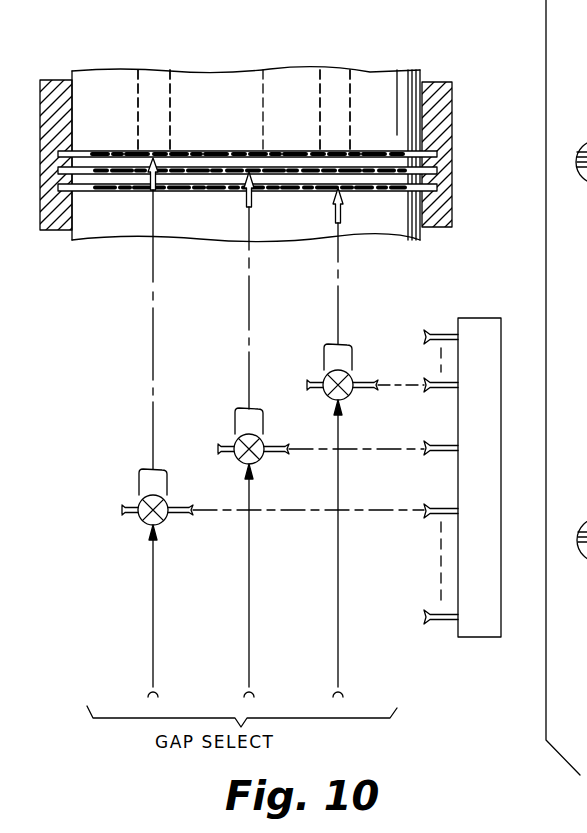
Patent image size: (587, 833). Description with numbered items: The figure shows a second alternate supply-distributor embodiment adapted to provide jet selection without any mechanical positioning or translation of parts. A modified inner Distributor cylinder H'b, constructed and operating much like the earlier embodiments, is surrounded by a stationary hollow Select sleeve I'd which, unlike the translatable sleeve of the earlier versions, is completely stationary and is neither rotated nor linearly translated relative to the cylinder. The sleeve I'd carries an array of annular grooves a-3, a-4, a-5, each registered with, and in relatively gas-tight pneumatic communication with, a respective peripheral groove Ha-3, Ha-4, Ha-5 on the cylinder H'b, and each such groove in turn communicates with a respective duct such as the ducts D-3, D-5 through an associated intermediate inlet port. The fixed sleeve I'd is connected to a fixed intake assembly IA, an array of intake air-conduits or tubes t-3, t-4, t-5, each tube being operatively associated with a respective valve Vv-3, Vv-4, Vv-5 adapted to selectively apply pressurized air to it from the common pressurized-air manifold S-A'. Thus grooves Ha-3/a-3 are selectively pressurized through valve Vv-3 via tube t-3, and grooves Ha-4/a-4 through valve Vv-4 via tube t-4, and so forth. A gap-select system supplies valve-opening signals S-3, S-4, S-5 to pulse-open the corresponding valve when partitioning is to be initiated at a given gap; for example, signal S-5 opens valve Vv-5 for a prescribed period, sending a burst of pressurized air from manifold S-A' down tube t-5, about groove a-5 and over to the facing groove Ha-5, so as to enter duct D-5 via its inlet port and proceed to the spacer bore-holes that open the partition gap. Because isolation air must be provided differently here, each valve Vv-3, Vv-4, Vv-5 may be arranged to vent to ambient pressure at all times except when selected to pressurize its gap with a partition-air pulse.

The inner Distributor cylinder H'b is at (246, 132).
The duct D-3 is at (152, 57).
The duct D-5 is at (328, 72).
The stationary hollow Select sleeve I'd is at (262, 154).
The annular groove a-3 is at (433, 152).
The annular groove a-4 is at (437, 168).
The annular groove a-5 is at (437, 186).
The groove Ha-3 is at (121, 168).
The groove Ha-4 is at (192, 171).
The groove Ha-5 is at (292, 179).
The intake air-conduit tube t-3 is at (153, 412).
The intake air-conduit tube t-4 is at (249, 354).
The intake air-conduit tube t-5 is at (338, 293).
The valve Vv-3 is at (166, 503).
The valve Vv-4 is at (262, 442).
The valve Vv-5 is at (351, 378).
The pressurized-air manifold S-A' is at (462, 455).
The intake assembly IA is at (96, 432).
The valve-opening signal S-3 is at (115, 618).
The valve-opening signal S-4 is at (218, 588).
The valve-opening signal S-5 is at (310, 556).